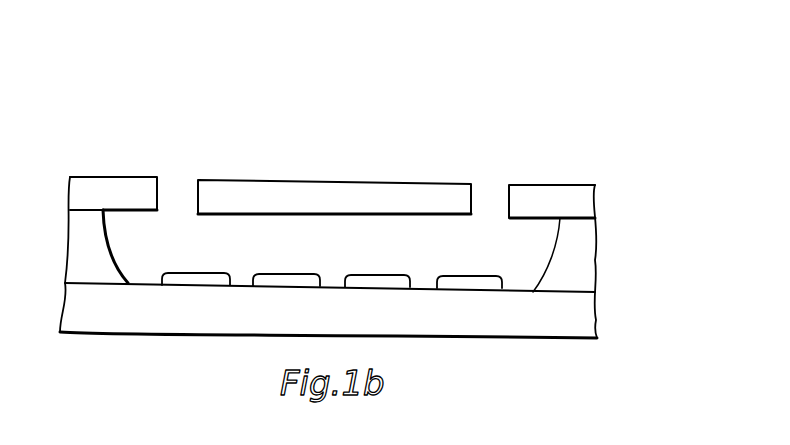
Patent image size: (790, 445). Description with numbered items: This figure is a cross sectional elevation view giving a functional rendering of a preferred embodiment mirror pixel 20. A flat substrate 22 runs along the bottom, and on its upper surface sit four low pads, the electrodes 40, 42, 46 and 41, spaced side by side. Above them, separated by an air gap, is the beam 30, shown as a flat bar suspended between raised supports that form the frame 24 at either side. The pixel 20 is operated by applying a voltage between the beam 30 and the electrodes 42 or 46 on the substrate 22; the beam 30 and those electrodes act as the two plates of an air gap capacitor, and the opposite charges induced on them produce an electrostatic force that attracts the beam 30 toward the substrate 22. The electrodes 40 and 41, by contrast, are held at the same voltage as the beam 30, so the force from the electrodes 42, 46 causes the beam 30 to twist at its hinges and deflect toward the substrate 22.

The pixel 20 is at (435, 157).
The substrate 22 is at (349, 328).
The frame / housing 24 is at (590, 261).
The beam 30 is at (325, 182).
The electrode 40 is at (205, 279).
The electrode 41 is at (473, 279).
The electrode 42 is at (293, 279).
The electrode 46 is at (382, 279).